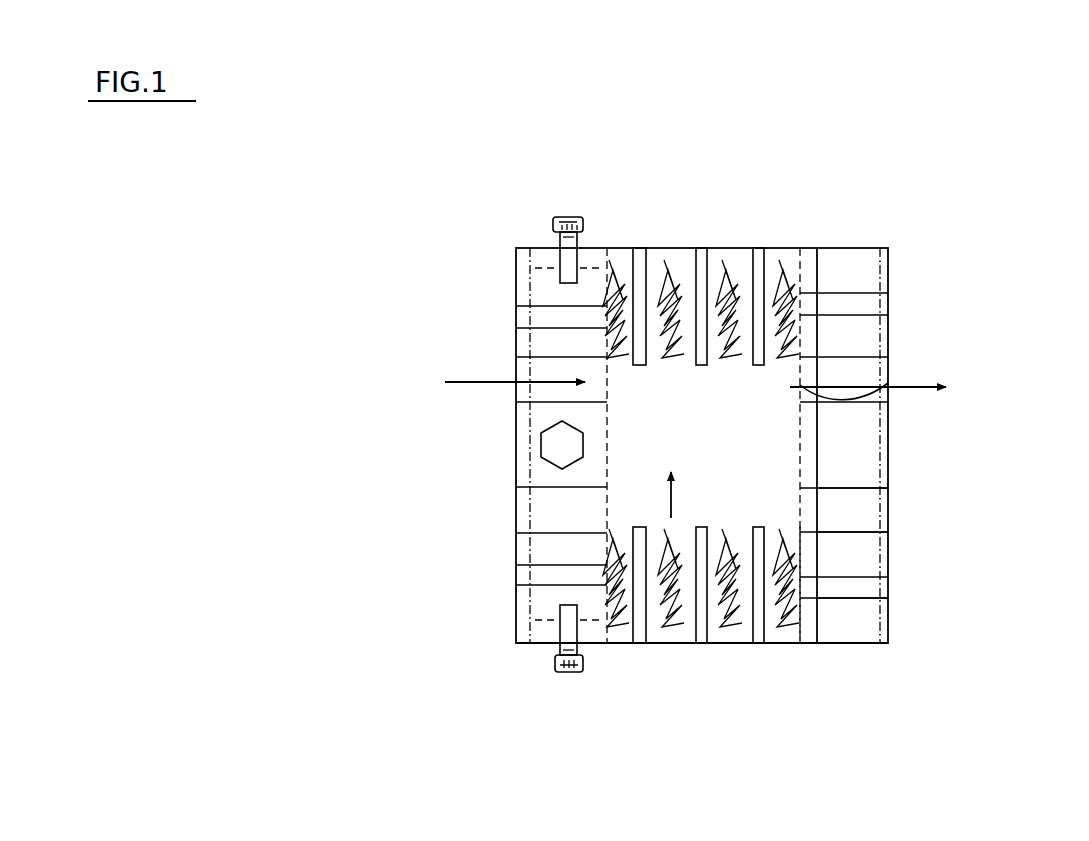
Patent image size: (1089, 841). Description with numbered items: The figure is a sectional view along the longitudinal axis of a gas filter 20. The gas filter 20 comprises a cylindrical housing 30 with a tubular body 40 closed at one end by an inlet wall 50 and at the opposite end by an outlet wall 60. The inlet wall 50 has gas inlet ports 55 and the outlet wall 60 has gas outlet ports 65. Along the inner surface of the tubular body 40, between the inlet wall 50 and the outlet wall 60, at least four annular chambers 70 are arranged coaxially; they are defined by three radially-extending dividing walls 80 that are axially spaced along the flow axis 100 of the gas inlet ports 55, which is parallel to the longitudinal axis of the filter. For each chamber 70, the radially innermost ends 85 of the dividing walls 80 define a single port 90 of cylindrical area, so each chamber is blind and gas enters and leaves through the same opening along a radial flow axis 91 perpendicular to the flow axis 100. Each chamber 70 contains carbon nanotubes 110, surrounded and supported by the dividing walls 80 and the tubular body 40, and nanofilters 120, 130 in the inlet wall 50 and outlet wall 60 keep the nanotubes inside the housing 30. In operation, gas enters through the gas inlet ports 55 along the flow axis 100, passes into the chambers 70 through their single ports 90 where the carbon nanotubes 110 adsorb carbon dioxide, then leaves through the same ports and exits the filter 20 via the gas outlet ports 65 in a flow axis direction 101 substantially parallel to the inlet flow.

The gas filter 20 is at (966, 114).
The cylindrical housing 30 is at (638, 657).
The tubular body 40 is at (828, 248).
The inlet wall 50 is at (543, 605).
The gas inlet ports 55 is at (521, 577).
The outlet wall 60 is at (850, 632).
The gas outlet ports 65 is at (865, 500).
The annular chambers 70 is at (720, 249).
The dividing walls 80 is at (705, 632).
The radially innermost ends 85 is at (757, 366).
The single port 90 is at (652, 370).
The flow axis 91 is at (676, 497).
The flow axis 100 is at (484, 381).
The flow axis direction 101 is at (905, 388).
The carbon nanotubes 110 is at (798, 632).
The nanofilter 120 is at (608, 417).
The nanofilter 130 is at (802, 382).